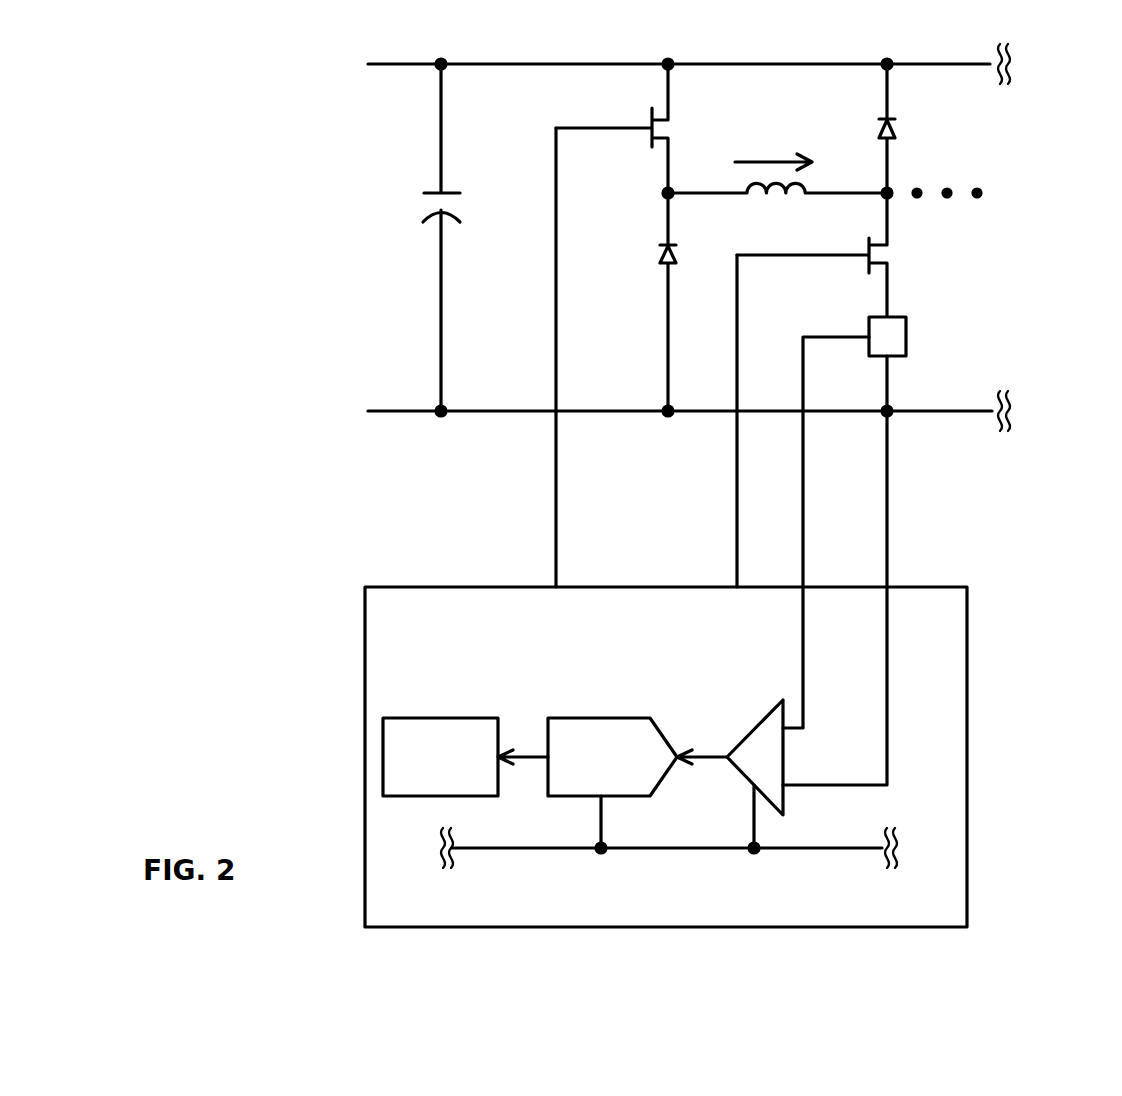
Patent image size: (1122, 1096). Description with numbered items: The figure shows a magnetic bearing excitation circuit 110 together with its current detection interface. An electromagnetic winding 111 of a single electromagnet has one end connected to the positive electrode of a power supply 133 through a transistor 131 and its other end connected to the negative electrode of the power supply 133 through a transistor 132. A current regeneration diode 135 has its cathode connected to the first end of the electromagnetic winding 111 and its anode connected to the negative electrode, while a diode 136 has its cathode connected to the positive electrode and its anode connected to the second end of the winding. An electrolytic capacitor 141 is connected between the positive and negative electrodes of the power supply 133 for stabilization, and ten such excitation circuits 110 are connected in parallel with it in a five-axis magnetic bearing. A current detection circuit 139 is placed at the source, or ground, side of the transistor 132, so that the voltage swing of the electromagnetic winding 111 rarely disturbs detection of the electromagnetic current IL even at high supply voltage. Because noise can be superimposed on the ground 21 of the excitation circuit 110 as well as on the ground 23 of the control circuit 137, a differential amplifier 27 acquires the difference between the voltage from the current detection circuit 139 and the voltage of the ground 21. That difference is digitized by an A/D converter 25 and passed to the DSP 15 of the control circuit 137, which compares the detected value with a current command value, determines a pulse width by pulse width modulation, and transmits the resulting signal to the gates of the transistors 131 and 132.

The power supply 133 is at (384, 66).
The electrolytic capacitor 141 is at (423, 220).
The transistor 131 is at (651, 140).
The current regeneration diode 135 is at (659, 258).
The excitation circuit 110 is at (816, 113).
The electromagnetic winding 111 is at (758, 200).
The diode 136 is at (897, 128).
The transistor 132 is at (879, 243).
The current detection circuit 139 is at (908, 337).
The ground 21 is at (940, 411).
The control circuit 137 is at (968, 757).
The DSP 15 is at (444, 718).
The A/D converter 25 is at (600, 718).
The differential amplifier 27 is at (756, 700).
The ground 23 is at (839, 849).